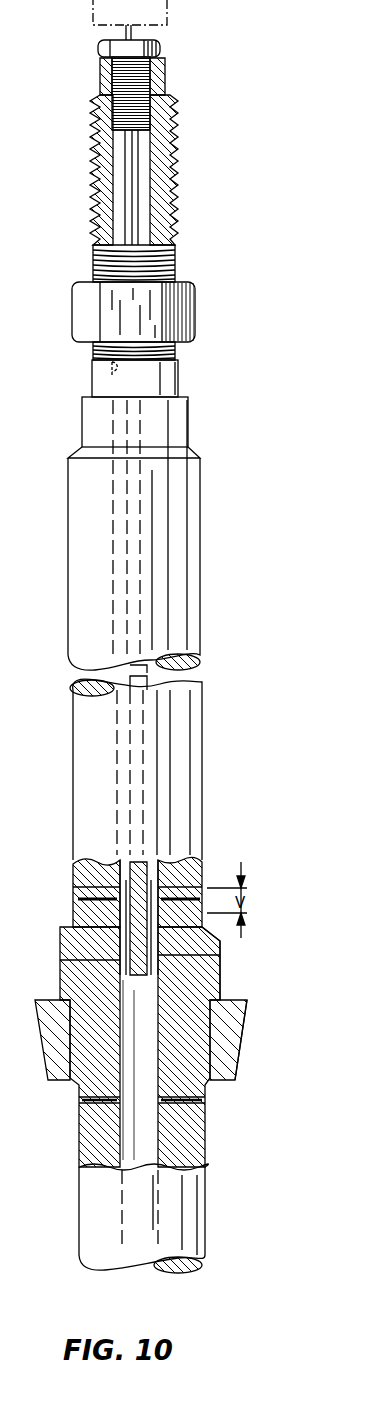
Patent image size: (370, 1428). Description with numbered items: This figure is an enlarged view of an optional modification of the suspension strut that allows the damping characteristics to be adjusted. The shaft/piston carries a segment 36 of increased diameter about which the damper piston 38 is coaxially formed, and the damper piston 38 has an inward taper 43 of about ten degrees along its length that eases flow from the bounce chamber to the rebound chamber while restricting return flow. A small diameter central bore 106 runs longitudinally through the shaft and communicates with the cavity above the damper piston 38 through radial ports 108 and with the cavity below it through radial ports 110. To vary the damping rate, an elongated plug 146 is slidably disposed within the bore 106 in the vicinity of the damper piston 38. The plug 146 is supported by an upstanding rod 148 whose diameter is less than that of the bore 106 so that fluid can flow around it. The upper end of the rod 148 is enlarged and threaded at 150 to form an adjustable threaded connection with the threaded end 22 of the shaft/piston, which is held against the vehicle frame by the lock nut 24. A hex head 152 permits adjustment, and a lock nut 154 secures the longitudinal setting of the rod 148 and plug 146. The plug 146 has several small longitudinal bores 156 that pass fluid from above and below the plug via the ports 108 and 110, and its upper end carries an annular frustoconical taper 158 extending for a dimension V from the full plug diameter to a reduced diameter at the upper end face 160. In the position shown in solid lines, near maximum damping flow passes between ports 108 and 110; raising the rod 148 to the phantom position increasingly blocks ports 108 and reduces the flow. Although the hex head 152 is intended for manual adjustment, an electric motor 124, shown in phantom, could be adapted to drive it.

The electric motor 124 is at (170, 15).
The hex head 152 is at (160, 47).
The lock nut 154 is at (104, 62).
The threaded end 150 is at (152, 90).
The threaded end 22 is at (178, 196).
The upstanding rod 148 is at (140, 216).
The lock nut 24 is at (197, 312).
The central bore 106 is at (112, 365).
The upper end face 160 is at (128, 860).
The radial ports 108 is at (183, 893).
The annular frustoconical taper 158 is at (79, 893).
The elongated plug 146 is at (73, 925).
The longitudinal bores 156 is at (62, 960).
The segment of increased diameter 36 is at (222, 941).
The damper piston 38 is at (247, 1001).
The inward taper 43 is at (245, 1058).
The radial ports 110 is at (207, 1115).